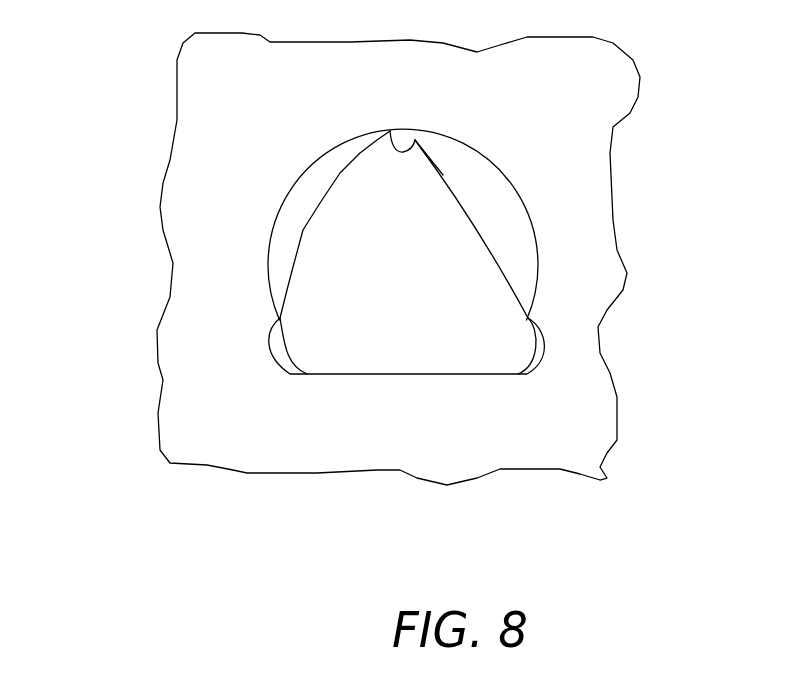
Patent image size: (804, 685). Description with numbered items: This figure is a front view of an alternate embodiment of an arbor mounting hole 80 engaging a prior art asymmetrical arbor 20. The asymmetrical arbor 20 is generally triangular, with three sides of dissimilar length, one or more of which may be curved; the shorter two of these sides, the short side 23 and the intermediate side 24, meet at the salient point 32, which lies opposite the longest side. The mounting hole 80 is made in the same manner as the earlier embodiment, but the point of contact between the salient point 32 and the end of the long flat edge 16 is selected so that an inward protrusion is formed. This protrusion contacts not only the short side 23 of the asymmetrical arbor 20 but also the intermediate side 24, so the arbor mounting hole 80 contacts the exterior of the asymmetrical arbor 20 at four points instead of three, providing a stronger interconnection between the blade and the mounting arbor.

The long flat edge 16 is at (382, 366).
The asymmetrical arbor 20 is at (443, 175).
The short side 23 is at (300, 240).
The intermediate side 24 is at (502, 272).
The salient point 32 is at (417, 145).
The mounting hole 80 is at (527, 213).